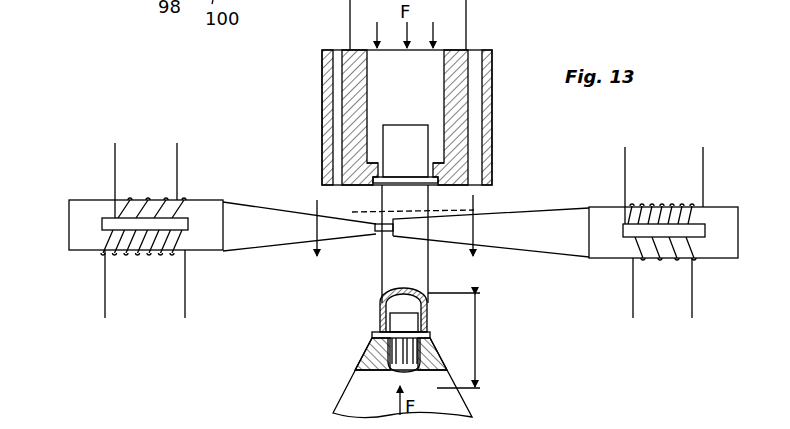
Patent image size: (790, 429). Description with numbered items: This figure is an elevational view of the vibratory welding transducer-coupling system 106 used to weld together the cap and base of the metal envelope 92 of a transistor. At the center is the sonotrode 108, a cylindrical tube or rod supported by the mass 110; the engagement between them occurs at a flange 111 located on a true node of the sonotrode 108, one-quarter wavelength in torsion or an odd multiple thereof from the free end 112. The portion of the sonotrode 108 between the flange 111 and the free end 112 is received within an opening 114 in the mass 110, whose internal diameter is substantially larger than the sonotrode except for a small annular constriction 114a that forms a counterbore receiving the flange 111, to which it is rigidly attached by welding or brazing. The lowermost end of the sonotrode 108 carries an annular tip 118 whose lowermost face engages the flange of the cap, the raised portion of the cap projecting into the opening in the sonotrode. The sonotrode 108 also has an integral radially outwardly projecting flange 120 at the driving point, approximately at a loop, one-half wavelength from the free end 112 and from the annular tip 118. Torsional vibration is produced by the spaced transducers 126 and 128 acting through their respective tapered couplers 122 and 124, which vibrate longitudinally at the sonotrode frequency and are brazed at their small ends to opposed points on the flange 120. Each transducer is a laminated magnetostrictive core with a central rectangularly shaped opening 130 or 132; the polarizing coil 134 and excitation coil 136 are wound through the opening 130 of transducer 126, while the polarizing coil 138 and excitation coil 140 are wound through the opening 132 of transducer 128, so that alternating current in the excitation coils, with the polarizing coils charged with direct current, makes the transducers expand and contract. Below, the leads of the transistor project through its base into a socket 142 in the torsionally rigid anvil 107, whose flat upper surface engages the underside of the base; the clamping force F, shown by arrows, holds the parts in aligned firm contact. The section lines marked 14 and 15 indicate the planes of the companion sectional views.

The section line 14- 14 is at (456, 340).
The section line 15- 15 is at (392, 241).
The metal envelope 92 is at (401, 321).
The vibratory welding transducer-coupling system 106 is at (340, 291).
The torsionally rigid anvil 107 is at (457, 406).
The sonotrode 108 is at (408, 263).
The mass 110 is at (492, 110).
The flange 111 is at (431, 181).
The free end 112 is at (397, 125).
The opening 114 is at (435, 70).
The annular constriction 114a is at (376, 166).
The annular tip 118 is at (379, 329).
The flange 120 is at (377, 223).
The coupler 122 is at (517, 230).
The coupler 124 is at (276, 246).
The transducer 126 is at (613, 250).
The transducer 128 is at (201, 253).
The rectangularly shaped opening 130 is at (705, 232).
The rectangularly shaped opening 132 is at (102, 225).
The polarizing coil 134 is at (658, 203).
The excitation coil 136 is at (678, 259).
The polarizing coil 138 is at (160, 254).
The excitation coil 140 is at (156, 198).
The socket 142 is at (389, 368).